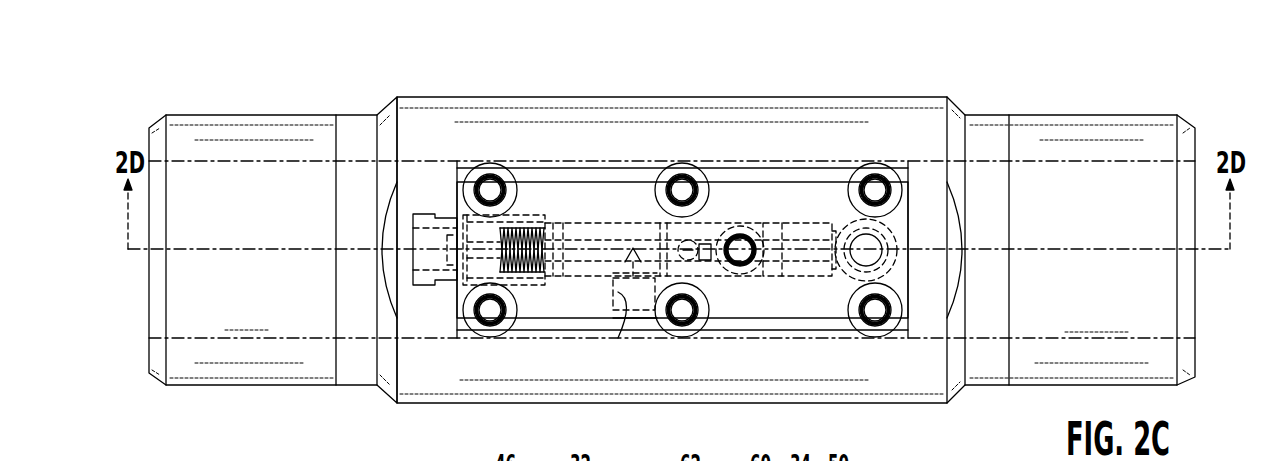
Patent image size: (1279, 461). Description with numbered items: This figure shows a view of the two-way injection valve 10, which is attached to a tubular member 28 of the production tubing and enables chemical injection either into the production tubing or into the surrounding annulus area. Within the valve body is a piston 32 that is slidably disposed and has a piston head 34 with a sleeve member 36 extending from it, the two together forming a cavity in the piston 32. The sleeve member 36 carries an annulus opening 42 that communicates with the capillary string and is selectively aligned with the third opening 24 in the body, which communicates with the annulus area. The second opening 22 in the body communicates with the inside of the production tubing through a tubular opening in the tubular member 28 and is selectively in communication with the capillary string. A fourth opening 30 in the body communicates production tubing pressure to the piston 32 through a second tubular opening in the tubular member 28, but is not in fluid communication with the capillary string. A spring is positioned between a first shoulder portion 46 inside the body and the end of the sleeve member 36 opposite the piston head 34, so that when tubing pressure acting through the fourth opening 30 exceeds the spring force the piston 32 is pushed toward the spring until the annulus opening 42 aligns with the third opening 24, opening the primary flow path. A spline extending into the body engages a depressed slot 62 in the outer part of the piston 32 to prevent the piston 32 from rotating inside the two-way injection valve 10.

The two-way injection valve 10 is at (1233, 113).
The second opening 22 is at (688, 238).
The third opening 24 is at (628, 292).
The tubular member 28 is at (850, 97).
The fourth opening 30 is at (880, 263).
The piston 32 is at (583, 223).
The piston head 34 is at (783, 238).
The sleeve member 36 is at (710, 254).
The annulus opening 42 is at (632, 250).
The first shoulder portion 46 is at (515, 270).
The depressed slot 62 is at (702, 262).